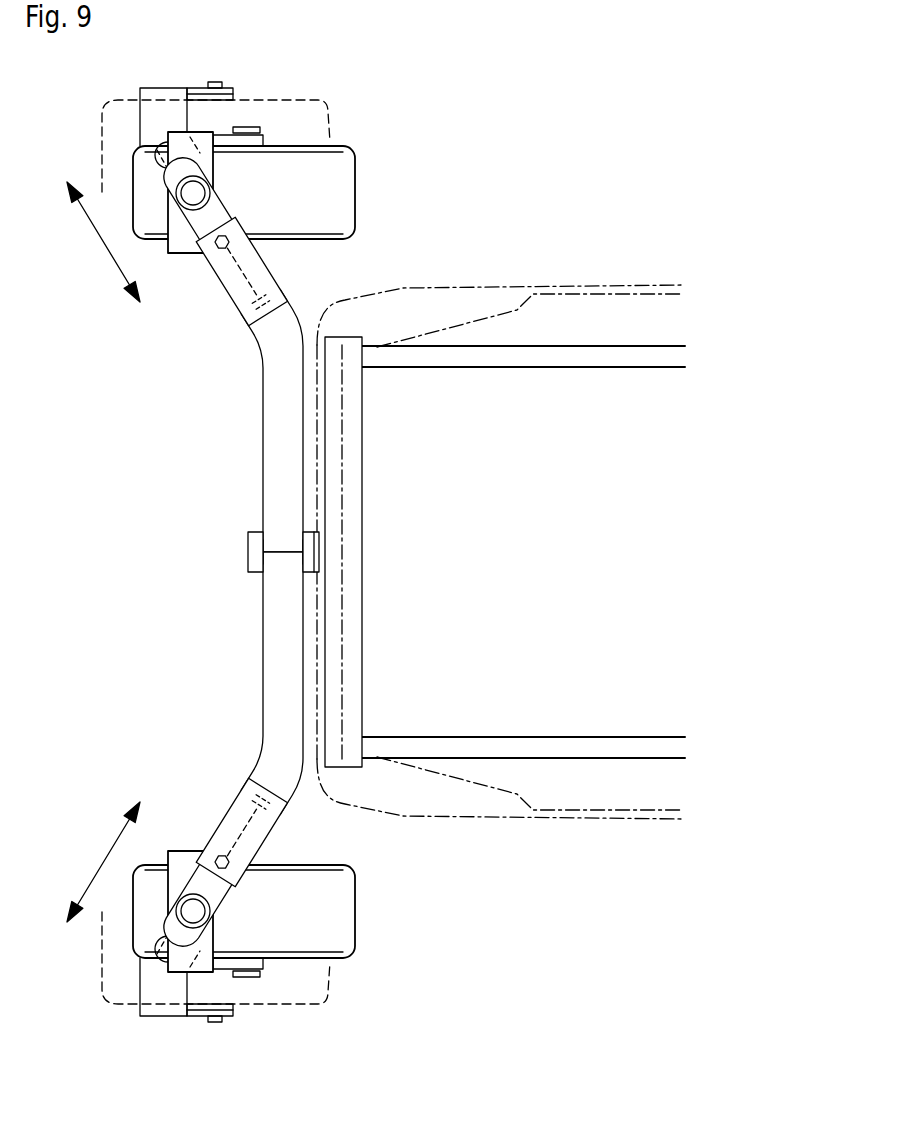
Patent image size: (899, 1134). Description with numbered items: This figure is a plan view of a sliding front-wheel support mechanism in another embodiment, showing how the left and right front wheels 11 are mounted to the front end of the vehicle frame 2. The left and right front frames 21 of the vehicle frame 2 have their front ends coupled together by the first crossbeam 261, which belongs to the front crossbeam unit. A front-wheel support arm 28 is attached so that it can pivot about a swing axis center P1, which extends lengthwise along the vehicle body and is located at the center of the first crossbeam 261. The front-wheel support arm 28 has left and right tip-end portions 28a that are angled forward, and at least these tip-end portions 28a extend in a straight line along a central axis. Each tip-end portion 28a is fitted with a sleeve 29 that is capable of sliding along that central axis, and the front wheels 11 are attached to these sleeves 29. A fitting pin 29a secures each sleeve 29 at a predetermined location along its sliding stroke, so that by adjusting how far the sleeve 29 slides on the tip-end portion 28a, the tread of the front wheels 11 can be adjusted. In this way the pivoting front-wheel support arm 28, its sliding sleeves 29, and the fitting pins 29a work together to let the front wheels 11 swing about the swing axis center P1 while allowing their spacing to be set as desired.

The vehicle frame 2 is at (668, 345).
The front wheels 11 is at (347, 195).
The front frames 21 is at (590, 350).
The first crossbeam 261 is at (360, 458).
The front-wheel support arm 28 is at (270, 455).
The tip-end portions 28a is at (240, 205).
The sleeves 29 is at (240, 325).
The fitting pin 29a is at (240, 205).
The swing axis center P1 is at (397, 552).